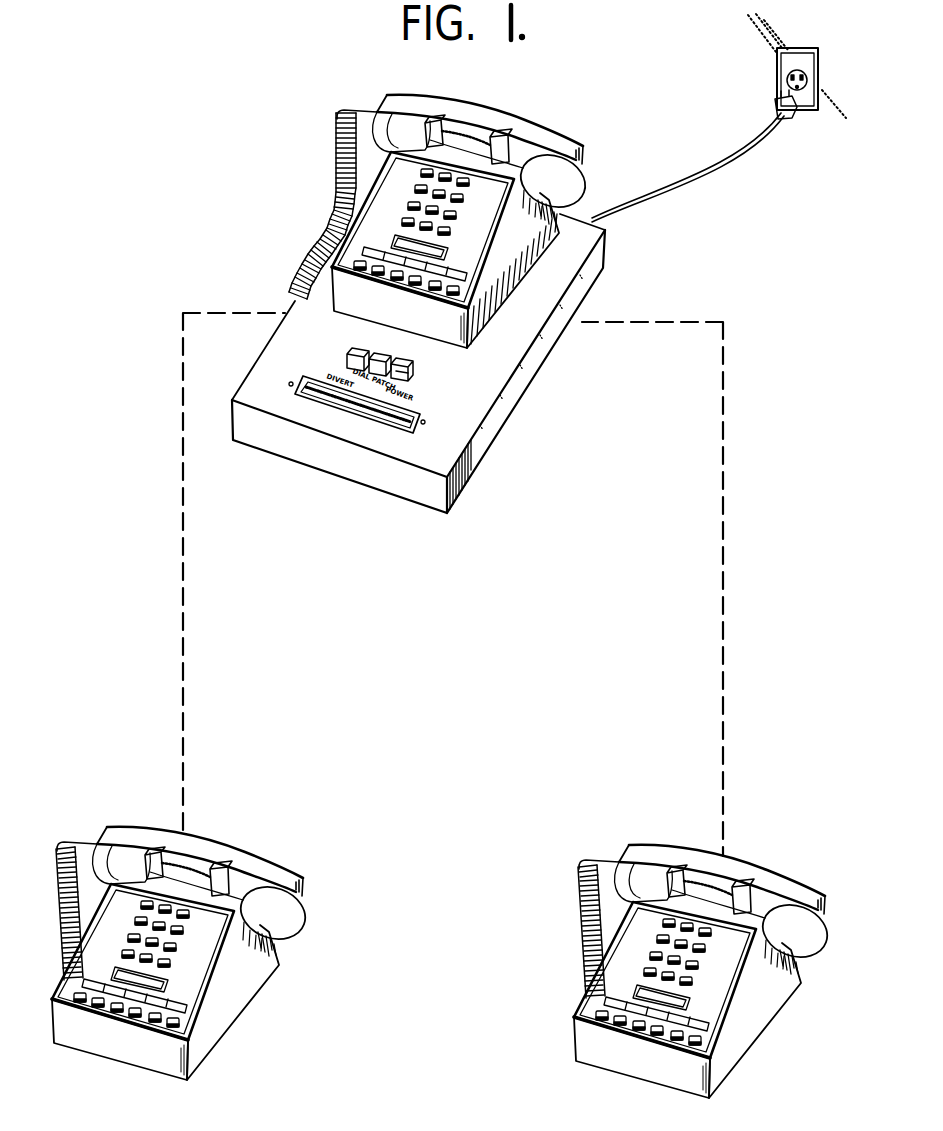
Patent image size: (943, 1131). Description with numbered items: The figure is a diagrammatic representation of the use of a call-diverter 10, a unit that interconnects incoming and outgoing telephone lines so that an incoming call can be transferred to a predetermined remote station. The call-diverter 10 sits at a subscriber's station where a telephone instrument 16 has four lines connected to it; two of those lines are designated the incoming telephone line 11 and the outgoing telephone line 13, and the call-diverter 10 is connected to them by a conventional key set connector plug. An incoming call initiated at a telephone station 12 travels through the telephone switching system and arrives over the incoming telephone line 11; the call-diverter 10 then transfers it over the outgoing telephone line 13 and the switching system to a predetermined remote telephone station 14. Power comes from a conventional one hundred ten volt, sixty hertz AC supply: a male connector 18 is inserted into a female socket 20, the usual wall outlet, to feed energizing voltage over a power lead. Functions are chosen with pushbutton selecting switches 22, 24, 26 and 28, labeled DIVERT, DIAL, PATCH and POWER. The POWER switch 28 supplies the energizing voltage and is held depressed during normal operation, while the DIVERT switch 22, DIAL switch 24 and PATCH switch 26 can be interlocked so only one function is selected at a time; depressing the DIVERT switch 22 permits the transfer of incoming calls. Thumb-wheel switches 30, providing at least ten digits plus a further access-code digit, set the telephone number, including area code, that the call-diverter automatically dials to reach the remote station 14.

The call-diverter 10 is at (328, 463).
The incoming telephone line 11 is at (229, 312).
The telephone station 12 is at (137, 1058).
The outgoing telephone line 13 is at (667, 312).
The telephone station 14 is at (653, 1077).
The telephone instrument 16 is at (343, 290).
The male connector 18 is at (792, 116).
The female socket 20 is at (808, 80).
The DIVERT switch 22 is at (347, 353).
The DIAL switch 24 is at (358, 347).
The PATCH switch 26 is at (412, 364).
The POWER switch 28 is at (413, 376).
The thumb-wheel switches 30 is at (403, 426).